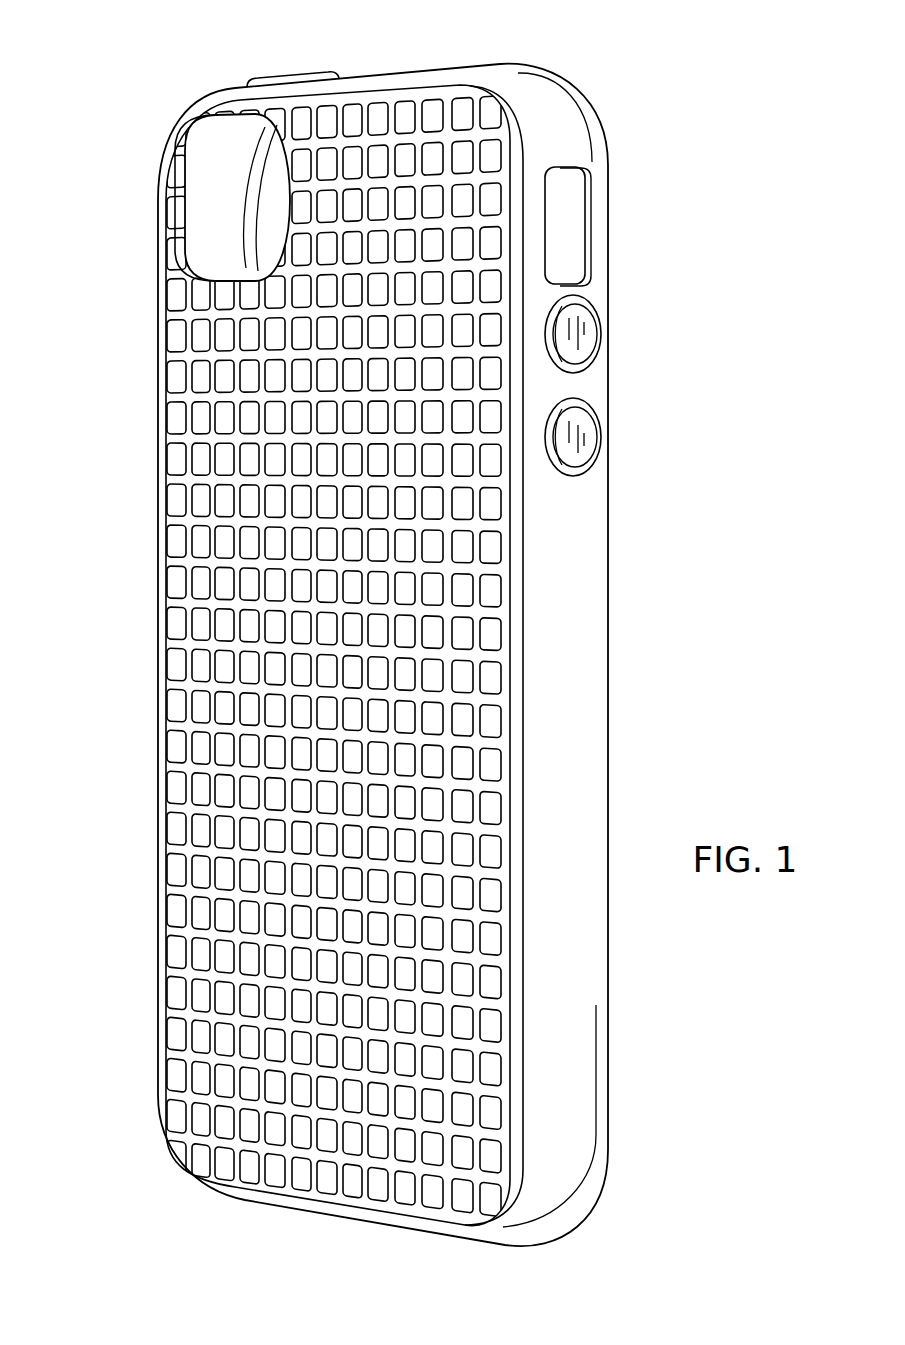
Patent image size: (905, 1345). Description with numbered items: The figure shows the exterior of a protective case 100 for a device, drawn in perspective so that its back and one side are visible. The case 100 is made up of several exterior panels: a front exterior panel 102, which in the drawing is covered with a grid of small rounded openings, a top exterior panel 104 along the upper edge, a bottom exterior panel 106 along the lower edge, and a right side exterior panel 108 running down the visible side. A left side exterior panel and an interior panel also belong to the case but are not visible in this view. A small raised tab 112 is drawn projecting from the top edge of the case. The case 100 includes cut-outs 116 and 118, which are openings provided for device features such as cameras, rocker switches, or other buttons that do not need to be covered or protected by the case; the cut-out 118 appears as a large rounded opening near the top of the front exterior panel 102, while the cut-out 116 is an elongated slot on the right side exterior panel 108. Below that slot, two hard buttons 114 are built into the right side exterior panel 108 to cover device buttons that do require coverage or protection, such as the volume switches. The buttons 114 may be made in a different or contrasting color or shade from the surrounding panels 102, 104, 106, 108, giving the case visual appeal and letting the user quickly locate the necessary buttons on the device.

The case 100 is at (598, 72).
The front exterior panel 102 is at (178, 545).
The top exterior panel 104 is at (393, 82).
The bottom exterior panel 106 is at (300, 1205).
The right side exterior panel 108 is at (573, 708).
The top tab 112 is at (280, 76).
The buttons 114 is at (585, 427).
The cut-out 116 is at (573, 228).
The cut-out 118 is at (183, 205).